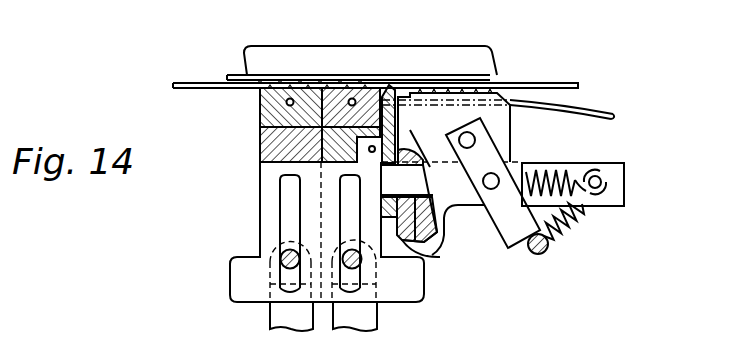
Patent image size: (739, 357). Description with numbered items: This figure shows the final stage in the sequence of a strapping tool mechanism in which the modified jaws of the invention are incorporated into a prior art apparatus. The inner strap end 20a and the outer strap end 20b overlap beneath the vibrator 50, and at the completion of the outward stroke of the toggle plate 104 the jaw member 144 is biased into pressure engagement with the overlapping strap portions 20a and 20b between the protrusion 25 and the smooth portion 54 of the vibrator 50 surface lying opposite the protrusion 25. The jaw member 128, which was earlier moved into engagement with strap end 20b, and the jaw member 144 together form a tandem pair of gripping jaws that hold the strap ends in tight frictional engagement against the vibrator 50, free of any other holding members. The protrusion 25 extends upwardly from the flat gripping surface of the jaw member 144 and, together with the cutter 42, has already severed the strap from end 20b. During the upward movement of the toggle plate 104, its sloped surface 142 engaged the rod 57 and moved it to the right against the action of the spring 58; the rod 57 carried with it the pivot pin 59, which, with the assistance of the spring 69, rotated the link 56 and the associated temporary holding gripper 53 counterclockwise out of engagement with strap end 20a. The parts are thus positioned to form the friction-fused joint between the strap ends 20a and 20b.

The inner strap end 20a is at (560, 82).
The strap end 20b is at (192, 72).
The protrusion 25 is at (374, 84).
The cutter 42 is at (383, 126).
The vibrator 50 is at (272, 53).
The temporary holding gripper 53 is at (505, 122).
The smooth portion of vibrator gripping surface 54 is at (382, 68).
The link 56 is at (521, 237).
The rod 57 is at (413, 242).
The spring 58 is at (572, 172).
The pivot pin 59 is at (493, 180).
The spring 69 is at (562, 231).
The toggle plate 104 is at (400, 298).
The jaw member 128 is at (277, 113).
The sloped surface 142 is at (395, 193).
The jaw member 144 is at (322, 126).